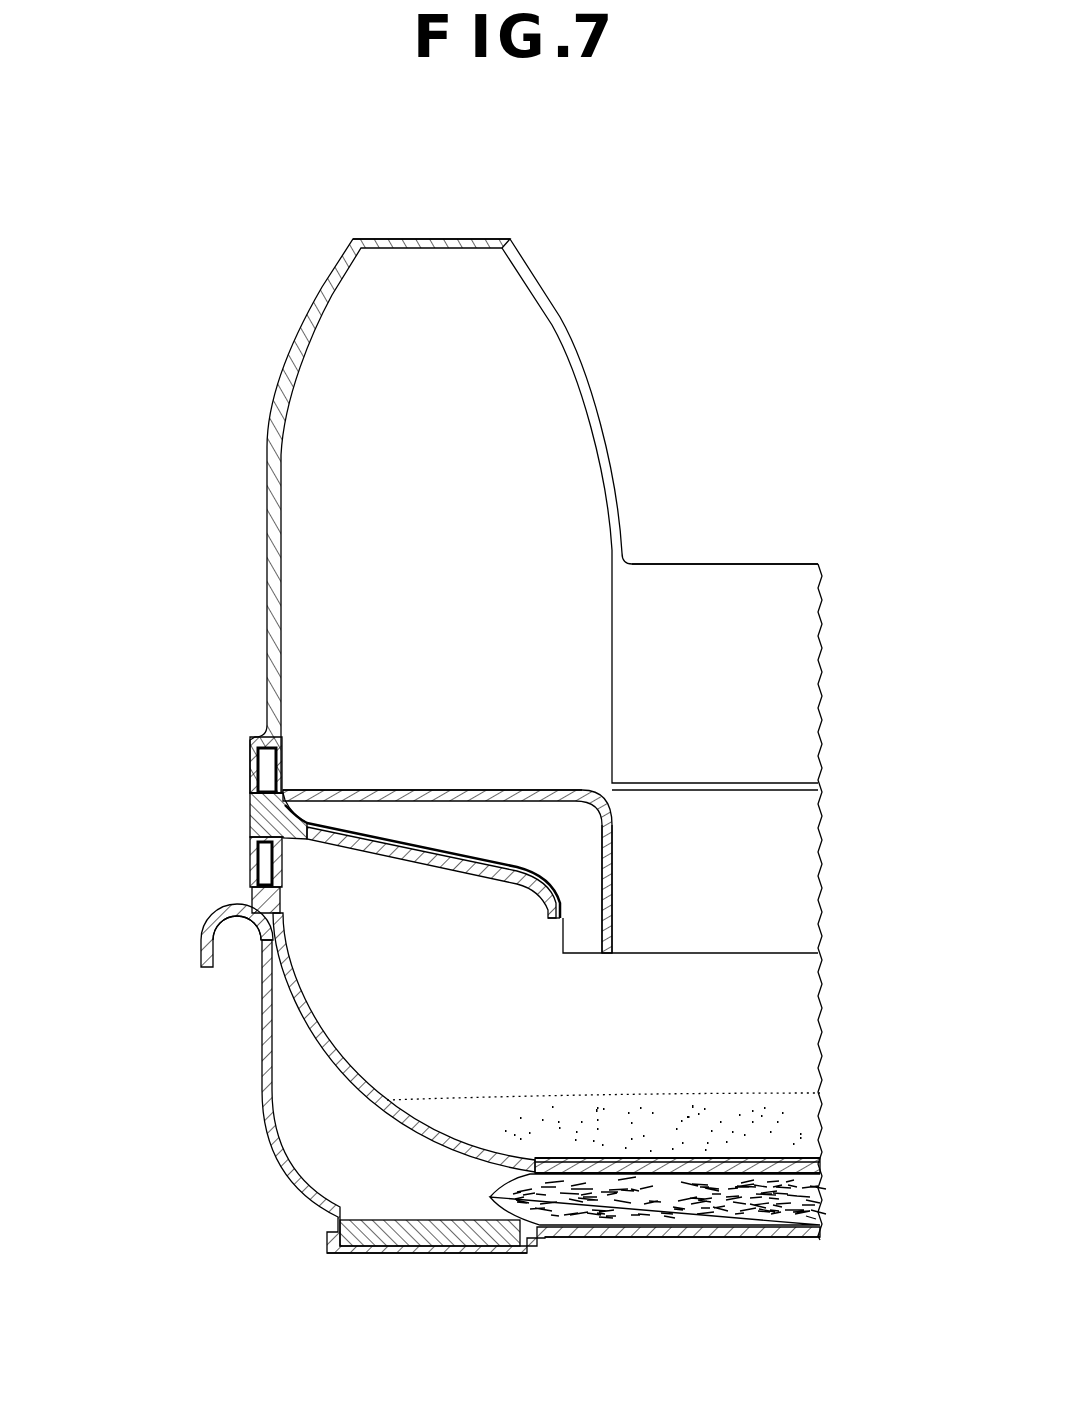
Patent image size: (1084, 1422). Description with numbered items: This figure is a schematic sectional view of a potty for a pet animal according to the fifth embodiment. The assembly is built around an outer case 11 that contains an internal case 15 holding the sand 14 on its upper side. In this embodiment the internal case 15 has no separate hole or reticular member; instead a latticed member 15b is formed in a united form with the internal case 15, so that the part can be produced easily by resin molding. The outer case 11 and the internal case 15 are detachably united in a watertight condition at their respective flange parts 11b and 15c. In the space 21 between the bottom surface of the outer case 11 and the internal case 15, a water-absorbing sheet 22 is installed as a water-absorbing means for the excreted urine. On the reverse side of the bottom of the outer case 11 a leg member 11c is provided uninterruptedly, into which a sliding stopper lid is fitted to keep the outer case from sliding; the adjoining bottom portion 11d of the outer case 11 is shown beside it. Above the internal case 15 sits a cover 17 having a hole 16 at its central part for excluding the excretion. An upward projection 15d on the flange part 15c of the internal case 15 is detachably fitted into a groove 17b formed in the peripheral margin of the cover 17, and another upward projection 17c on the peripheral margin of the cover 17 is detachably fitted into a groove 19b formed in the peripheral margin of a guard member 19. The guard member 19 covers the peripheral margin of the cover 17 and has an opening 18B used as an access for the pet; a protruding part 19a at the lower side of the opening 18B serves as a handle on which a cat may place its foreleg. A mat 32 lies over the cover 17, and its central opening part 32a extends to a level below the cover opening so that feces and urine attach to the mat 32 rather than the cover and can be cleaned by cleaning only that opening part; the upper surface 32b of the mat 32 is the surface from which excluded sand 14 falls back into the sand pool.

The outer case 11 is at (260, 1113).
The flange part of outer case 11b is at (242, 928).
The leg member 11c is at (360, 1233).
The bottom portion of outer case 11d is at (503, 1253).
The sand 14 is at (740, 1113).
The internal case 15 is at (355, 1088).
The latticed member 15b is at (787, 1160).
The flange part of internal case 15c is at (205, 943).
The upward projection 15d is at (250, 822).
The hole 16 is at (560, 906).
The cover 17 is at (470, 862).
The groove 17b is at (250, 868).
The upward projection 17c is at (258, 735).
The opening 18B is at (565, 326).
The guard member 19 is at (194, 465).
The protruding part 19a is at (775, 563).
The groove 19b is at (250, 762).
The space 21 is at (440, 1193).
The water-absorbing sheet 22 is at (757, 1210).
The mat 32 is at (453, 787).
The central opening part of mat 32a is at (612, 850).
The upper surface of plate 32b is at (533, 790).